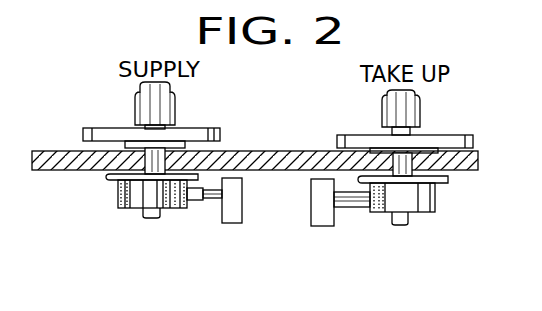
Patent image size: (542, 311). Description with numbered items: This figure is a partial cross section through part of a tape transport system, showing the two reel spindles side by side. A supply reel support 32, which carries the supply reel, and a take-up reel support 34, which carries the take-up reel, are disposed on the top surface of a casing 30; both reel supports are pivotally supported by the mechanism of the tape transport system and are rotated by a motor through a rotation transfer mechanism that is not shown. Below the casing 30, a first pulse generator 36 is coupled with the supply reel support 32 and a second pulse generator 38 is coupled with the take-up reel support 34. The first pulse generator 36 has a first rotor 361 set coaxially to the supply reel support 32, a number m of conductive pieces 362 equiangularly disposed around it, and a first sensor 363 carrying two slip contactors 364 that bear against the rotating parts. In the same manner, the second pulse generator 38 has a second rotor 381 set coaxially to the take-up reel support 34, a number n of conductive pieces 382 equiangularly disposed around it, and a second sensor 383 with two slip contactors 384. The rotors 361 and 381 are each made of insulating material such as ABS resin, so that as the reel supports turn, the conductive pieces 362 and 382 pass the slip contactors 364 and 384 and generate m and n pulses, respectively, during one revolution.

The casing 30 is at (282, 151).
The supply reel support 32 is at (210, 128).
The take-up reel support 34 is at (345, 135).
The first pulse generator 36 is at (166, 290).
The second pulse generator 38 is at (409, 296).
The first rotor 361 is at (126, 208).
The conductive pieces 362 is at (163, 201).
The first sensor 363 is at (243, 189).
The slip contactors 364 is at (208, 201).
The second rotor 381 is at (428, 213).
The conductive pieces 382 is at (384, 213).
The second sensor 383 is at (312, 205).
The slip contactors 384 is at (358, 207).